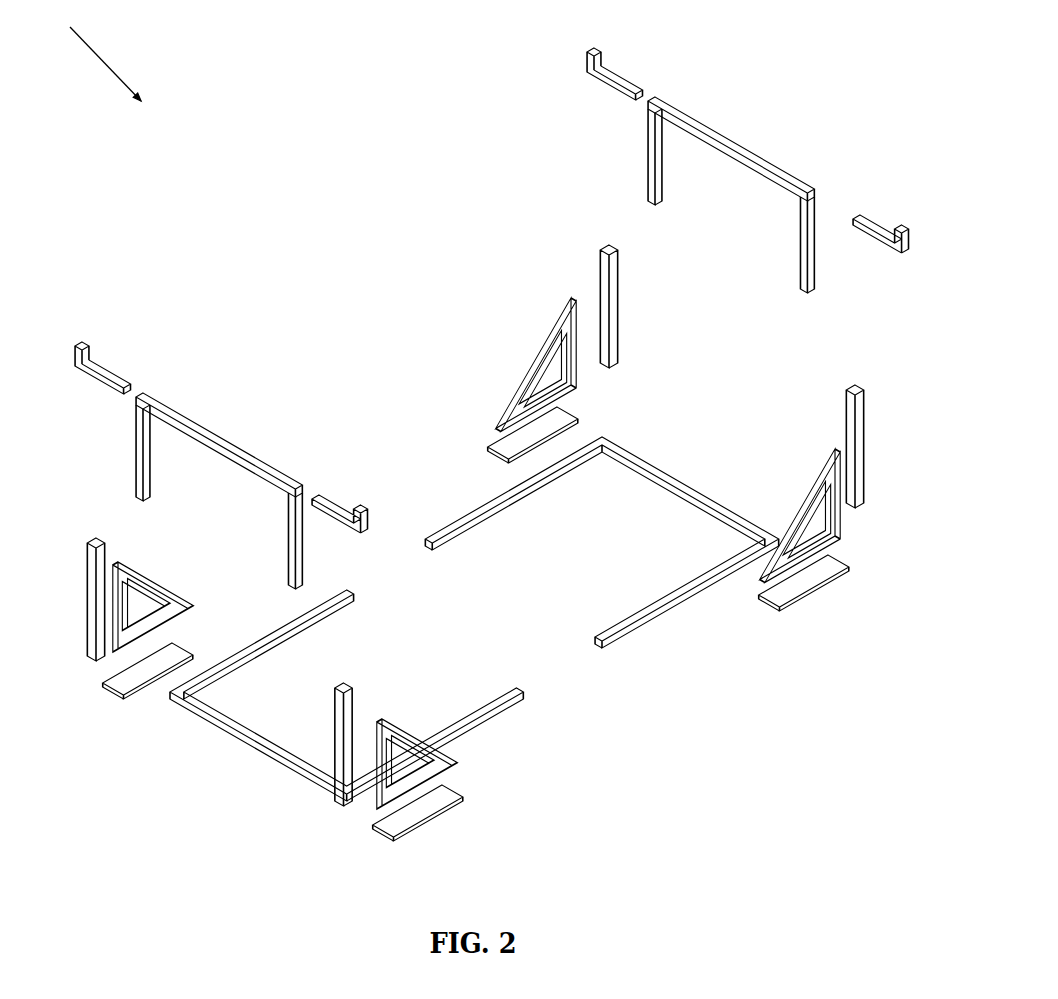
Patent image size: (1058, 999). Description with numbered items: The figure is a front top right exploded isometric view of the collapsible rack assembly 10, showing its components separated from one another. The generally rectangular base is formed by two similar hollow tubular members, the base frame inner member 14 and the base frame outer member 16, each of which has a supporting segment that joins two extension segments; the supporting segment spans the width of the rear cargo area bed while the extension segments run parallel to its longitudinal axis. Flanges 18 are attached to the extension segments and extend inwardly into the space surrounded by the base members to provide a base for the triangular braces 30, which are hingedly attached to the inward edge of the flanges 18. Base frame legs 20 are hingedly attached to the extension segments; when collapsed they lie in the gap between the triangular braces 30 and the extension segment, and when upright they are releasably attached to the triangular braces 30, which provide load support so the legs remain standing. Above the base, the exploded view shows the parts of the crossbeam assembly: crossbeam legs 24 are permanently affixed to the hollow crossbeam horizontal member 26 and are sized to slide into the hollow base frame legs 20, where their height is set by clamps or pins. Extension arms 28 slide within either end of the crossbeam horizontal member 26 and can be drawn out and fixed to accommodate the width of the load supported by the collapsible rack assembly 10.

The collapsible rack assembly 10 is at (96, 54).
The base frame inner member 14 is at (670, 462).
The base frame outer member 16 is at (238, 728).
The flange 18 is at (546, 430).
The base frame leg 20 is at (598, 274).
The crossbeam leg 24 is at (642, 150).
The crossbeam horizontal member 26 is at (735, 133).
The extension arm 28 is at (610, 67).
The triangular brace 30 is at (528, 352).